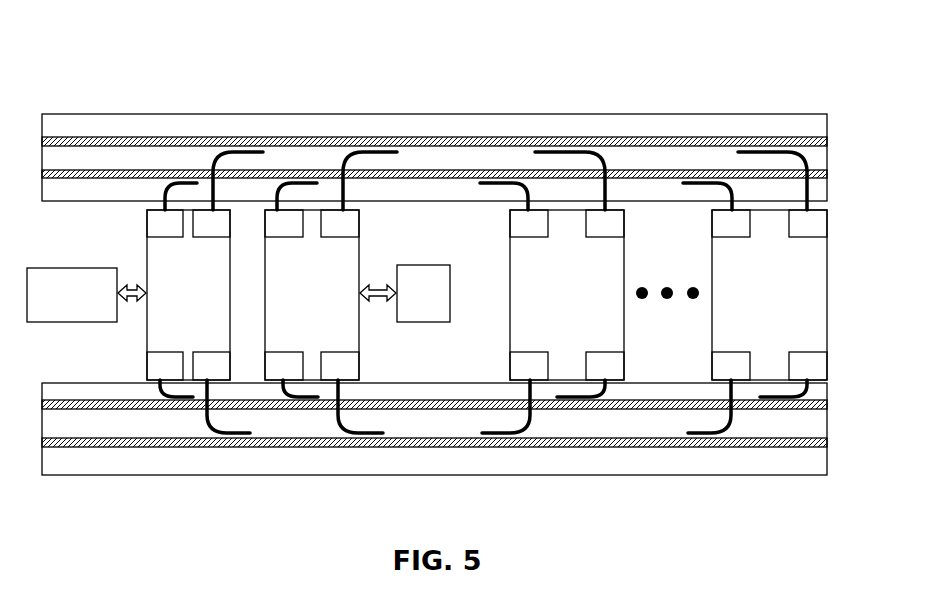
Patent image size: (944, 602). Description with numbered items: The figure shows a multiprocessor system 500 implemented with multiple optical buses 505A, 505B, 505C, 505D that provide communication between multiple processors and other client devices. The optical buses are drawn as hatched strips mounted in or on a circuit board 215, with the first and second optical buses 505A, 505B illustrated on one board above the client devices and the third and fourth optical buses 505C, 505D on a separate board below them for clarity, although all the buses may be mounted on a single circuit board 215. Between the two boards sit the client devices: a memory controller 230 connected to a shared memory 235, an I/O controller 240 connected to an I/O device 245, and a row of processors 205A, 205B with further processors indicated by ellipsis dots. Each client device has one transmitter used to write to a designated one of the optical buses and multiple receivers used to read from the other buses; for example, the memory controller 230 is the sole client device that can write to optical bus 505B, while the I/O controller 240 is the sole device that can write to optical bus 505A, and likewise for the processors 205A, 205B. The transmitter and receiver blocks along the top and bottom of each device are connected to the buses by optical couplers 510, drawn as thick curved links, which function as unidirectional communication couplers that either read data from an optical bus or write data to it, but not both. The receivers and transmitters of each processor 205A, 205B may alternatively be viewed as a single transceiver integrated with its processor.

The multiprocessor system 500 is at (803, 79).
The circuit board 215 is at (434, 294).
The optical bus 505A is at (828, 140).
The optical bus 505B is at (828, 173).
The optical bus 505C is at (830, 398).
The optical bus 505D is at (830, 437).
The optical coupler 510 is at (494, 293).
The shared memory 235 is at (86, 295).
The memory controller 230 is at (188, 295).
The input/output controller 240 is at (330, 295).
The I/O device 245 is at (417, 265).
The processor 205A is at (567, 295).
The processor 205B is at (769, 295).